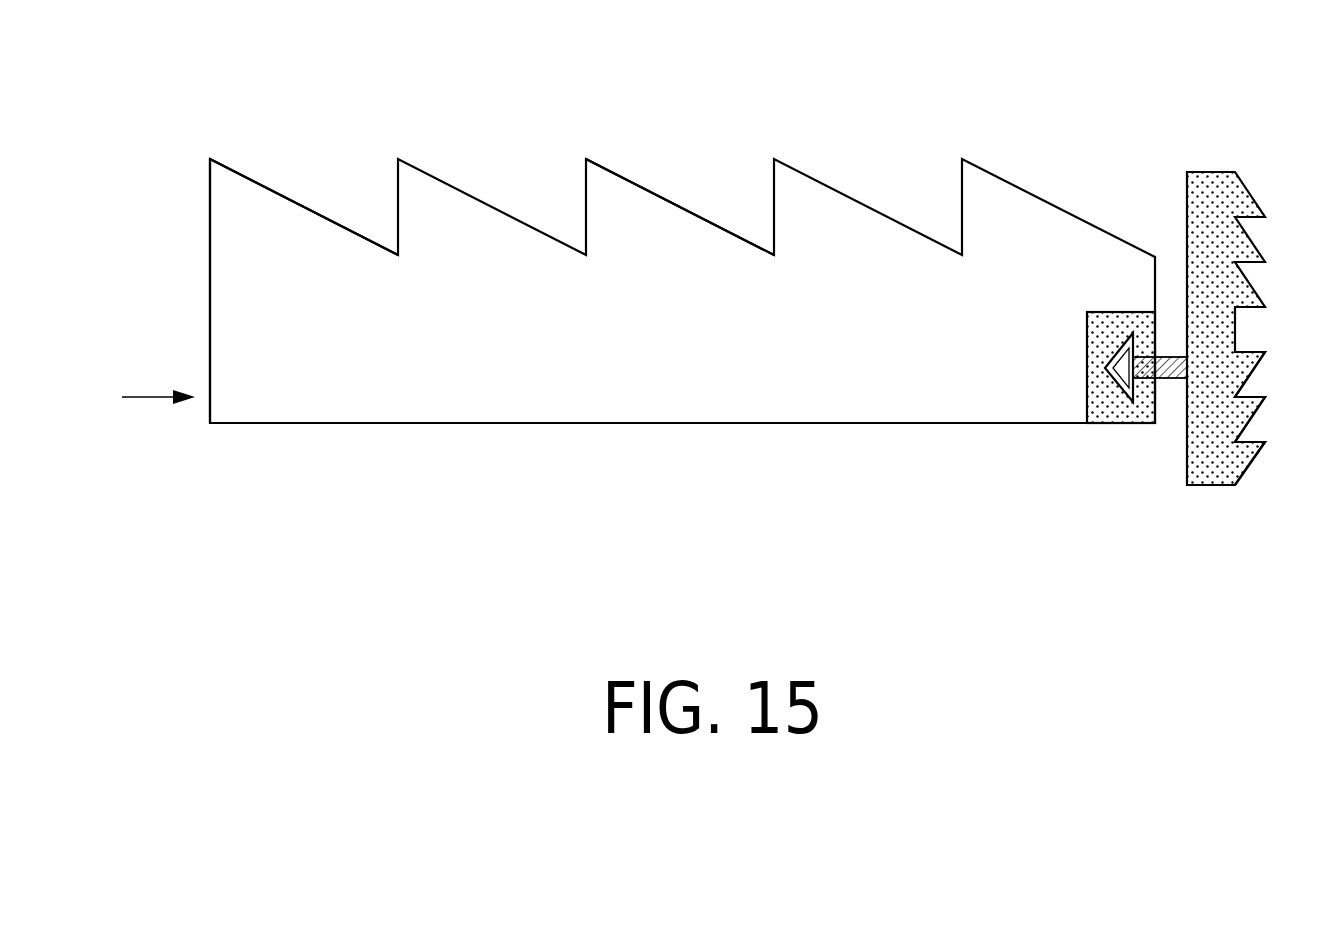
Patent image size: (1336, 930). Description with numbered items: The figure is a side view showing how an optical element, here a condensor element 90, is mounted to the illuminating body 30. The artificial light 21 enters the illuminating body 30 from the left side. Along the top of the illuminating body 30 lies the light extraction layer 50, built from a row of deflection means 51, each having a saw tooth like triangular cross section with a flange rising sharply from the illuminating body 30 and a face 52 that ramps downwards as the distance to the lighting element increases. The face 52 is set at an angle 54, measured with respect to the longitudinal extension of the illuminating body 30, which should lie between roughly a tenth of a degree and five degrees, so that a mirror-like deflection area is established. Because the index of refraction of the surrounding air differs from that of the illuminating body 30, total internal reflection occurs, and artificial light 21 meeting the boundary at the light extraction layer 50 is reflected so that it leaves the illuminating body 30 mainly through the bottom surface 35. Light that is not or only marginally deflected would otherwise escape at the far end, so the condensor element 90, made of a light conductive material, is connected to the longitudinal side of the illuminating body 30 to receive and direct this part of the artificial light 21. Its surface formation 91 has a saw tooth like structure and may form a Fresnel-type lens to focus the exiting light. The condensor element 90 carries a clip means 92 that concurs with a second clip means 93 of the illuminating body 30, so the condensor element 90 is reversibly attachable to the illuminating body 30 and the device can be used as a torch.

The light extraction layer 50 is at (898, 154).
The deflection means 51 is at (652, 212).
The face 52 is at (473, 193).
The angle 54 is at (166, 314).
The artificial light 21 is at (148, 398).
The bottom surface 35 is at (488, 424).
The illuminating body 30 is at (653, 390).
The condensor element 90 is at (1230, 148).
The surface formation 91 is at (1238, 458).
The clip means 92 is at (1173, 378).
The second clip means 93 is at (1103, 408).